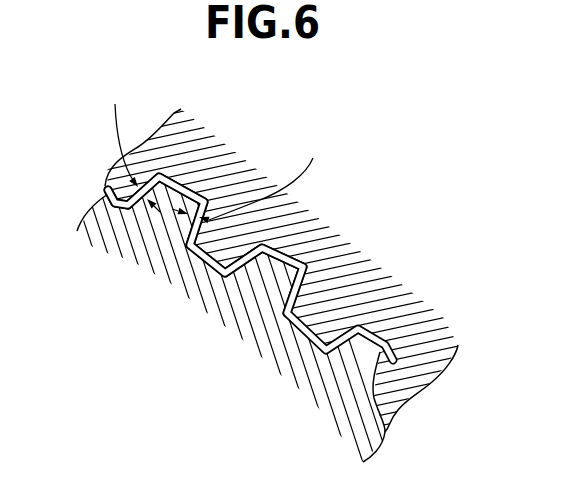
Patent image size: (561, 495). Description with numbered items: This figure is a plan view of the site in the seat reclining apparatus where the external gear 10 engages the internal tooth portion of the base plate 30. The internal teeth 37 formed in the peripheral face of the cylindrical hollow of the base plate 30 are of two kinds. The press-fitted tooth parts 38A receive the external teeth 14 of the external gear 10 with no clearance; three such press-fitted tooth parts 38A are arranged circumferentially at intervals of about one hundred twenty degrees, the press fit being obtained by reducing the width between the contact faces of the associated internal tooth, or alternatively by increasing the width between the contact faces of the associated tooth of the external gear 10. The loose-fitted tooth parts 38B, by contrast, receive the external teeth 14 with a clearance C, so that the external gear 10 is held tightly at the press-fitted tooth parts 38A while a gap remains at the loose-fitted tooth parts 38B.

The external gear 10 is at (312, 320).
The external teeth 14 is at (247, 276).
The base plate 30 is at (106, 212).
The internal teeth 37 is at (388, 355).
The press-fitted tooth parts 38A is at (278, 302).
The loose-fitted tooth parts 38B is at (202, 174).
The clearance C is at (214, 151).